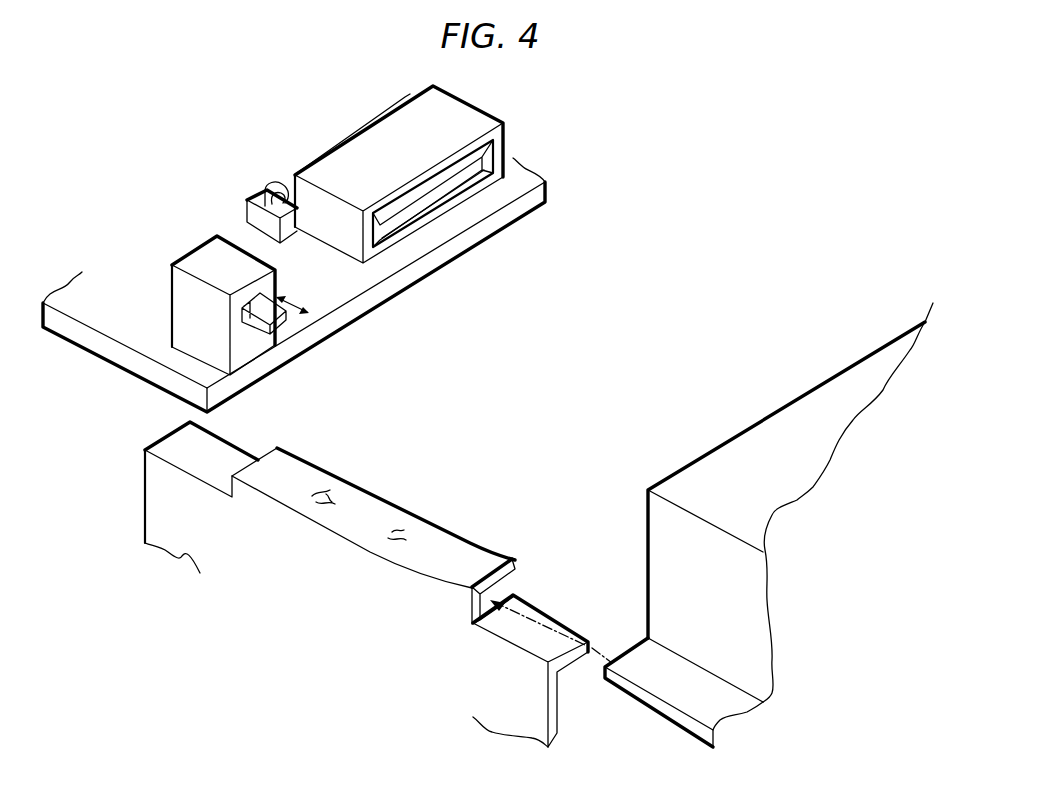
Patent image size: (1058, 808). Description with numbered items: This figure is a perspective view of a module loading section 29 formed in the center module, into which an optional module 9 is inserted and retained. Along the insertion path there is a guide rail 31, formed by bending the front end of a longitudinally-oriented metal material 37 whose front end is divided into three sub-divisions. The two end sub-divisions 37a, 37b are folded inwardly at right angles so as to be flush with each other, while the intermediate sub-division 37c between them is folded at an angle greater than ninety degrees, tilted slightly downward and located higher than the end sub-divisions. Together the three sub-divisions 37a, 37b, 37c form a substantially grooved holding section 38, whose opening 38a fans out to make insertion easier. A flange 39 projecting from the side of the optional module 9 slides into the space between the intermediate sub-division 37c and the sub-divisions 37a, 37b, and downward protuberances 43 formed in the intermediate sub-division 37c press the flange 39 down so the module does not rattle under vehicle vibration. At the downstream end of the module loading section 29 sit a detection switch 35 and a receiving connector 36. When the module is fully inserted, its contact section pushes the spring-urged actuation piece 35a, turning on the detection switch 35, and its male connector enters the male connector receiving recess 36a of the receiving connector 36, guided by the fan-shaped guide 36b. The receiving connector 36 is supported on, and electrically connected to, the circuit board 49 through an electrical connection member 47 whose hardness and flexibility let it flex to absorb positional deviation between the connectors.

The optional module 9 is at (745, 431).
The module loading section 29 is at (619, 336).
The guide rail 31 is at (390, 592).
The detection switch 35 is at (190, 251).
The actuation piece 35a is at (285, 322).
The receiving connector 36 is at (360, 143).
The male connector receiving recess 36a is at (385, 220).
The fan-shaped guide 36b is at (452, 193).
The metal material 37 is at (177, 552).
The sub-division 37a is at (553, 612).
The sub-division 37b is at (232, 443).
The intermediate sub-division 37c is at (390, 502).
The holding section 38 is at (515, 583).
The opening 38a is at (490, 611).
The flange 39 is at (630, 695).
The protuberance 43 is at (330, 490).
The electrical connection member 47 is at (275, 178).
The circuit board 49 is at (80, 348).